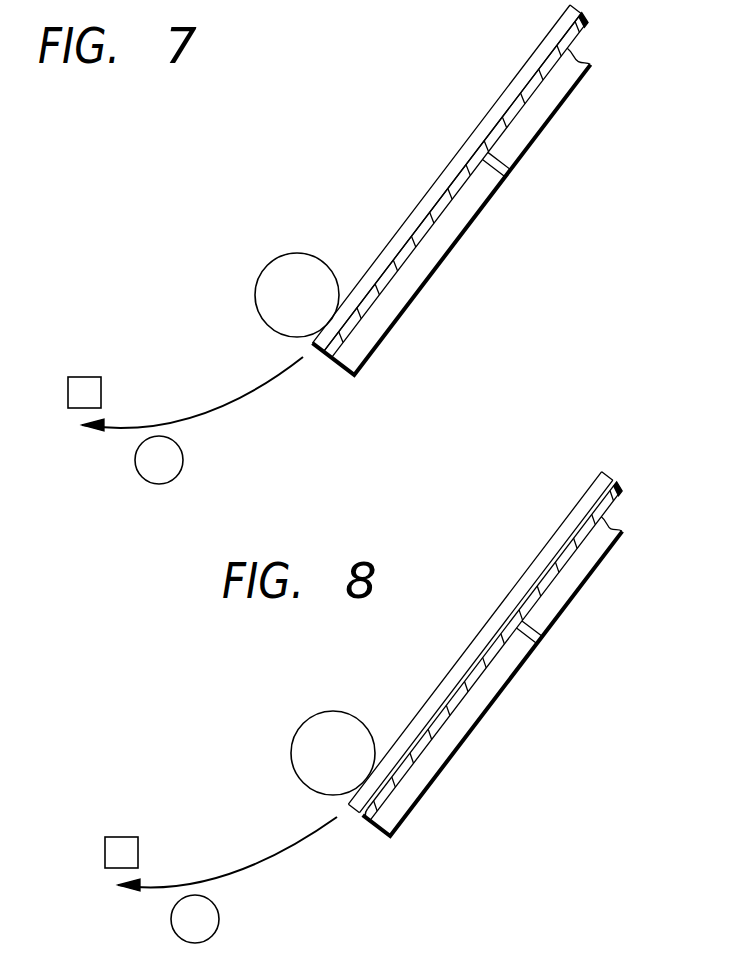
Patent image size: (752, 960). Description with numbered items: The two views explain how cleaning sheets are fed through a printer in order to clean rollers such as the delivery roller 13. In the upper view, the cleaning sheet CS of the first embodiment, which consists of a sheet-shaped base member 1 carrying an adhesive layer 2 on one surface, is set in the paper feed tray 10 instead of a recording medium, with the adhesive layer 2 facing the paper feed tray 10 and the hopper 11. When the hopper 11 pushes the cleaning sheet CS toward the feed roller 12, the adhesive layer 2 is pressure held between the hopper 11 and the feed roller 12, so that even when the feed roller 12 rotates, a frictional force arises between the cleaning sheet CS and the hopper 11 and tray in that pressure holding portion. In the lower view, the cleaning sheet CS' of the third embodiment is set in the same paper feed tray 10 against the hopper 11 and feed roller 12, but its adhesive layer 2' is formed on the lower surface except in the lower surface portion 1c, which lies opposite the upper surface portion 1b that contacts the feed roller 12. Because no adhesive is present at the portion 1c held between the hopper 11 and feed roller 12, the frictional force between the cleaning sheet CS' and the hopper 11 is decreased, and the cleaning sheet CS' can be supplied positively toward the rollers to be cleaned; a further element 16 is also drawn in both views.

In FIG. 7, the sheet-shaped base member 1 is at (480, 127).
In FIG. 8, the sheet-shaped base member 1 is at (530, 563).
In FIG. 8, the upper surface portion 1b is at (342, 800).
In FIG. 8, the lower surface portion 1c is at (385, 803).
In FIG. 7, the adhesive layer 2 is at (615, 27).
In FIG. 8, the adhesive layer 2' is at (637, 462).
In FIG. 7, the paper feed tray 10 is at (533, 125).
In FIG. 8, the paper feed tray 10 is at (587, 558).
In FIG. 7, the hopper 11 is at (438, 252).
In FIG. 8, the hopper 11 is at (493, 682).
In FIG. 7, the feed roller 12 is at (305, 268).
In FIG. 8, the feed roller 12 is at (340, 728).
In FIG. 7, the delivery roller 13 is at (172, 462).
In FIG. 8, the delivery roller 13 is at (207, 922).
In FIG. 7, the sensor 16 is at (88, 387).
In FIG. 8, the sensor 16 is at (125, 845).
In FIG. 7, the cleaning sheet CS is at (490, 34).
In FIG. 8, the cleaning sheet CS' is at (528, 487).